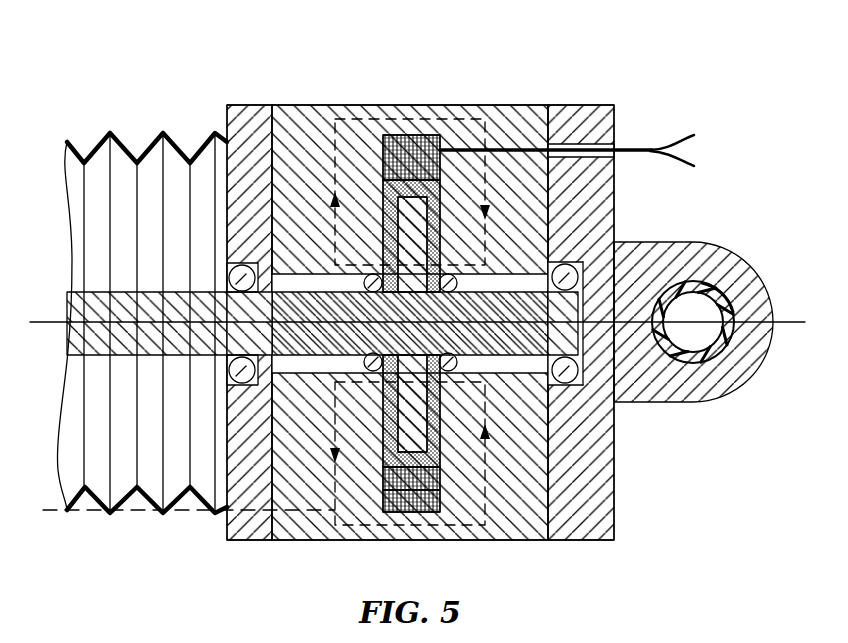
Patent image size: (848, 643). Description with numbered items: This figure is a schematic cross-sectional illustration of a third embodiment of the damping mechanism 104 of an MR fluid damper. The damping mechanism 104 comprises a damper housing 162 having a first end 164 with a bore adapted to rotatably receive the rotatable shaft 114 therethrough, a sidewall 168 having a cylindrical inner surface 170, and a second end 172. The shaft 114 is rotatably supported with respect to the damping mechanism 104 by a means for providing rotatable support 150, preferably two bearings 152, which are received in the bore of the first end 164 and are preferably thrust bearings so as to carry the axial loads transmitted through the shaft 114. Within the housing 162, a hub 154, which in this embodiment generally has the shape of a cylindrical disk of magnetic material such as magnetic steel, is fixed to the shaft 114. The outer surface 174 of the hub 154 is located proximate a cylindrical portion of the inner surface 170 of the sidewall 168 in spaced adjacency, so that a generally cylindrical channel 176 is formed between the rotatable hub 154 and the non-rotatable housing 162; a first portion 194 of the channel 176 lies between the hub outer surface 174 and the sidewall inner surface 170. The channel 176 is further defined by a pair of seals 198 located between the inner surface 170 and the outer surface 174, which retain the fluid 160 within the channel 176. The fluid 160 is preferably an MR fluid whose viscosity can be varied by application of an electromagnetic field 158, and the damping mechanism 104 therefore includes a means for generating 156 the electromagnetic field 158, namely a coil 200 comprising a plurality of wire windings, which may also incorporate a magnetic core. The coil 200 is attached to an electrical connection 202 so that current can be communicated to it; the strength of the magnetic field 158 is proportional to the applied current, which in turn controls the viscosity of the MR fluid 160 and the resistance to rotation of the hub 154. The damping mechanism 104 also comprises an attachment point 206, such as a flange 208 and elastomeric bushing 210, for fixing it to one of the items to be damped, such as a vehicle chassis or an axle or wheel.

The damping mechanism 104 is at (630, 63).
The rotatable shaft 114 is at (709, 292).
The means for providing rotatable support 150 is at (228, 388).
The bearing 152 is at (240, 371).
The hub 154 is at (412, 238).
The means for generating electromagnetic field 156 is at (440, 487).
The electromagnetic field 158 is at (483, 500).
The fluid 160 is at (412, 463).
The damper housing 162 is at (423, 167).
The first end 164 is at (223, 118).
The sidewall 168 is at (295, 155).
The cylindrical inner surface 170 is at (445, 235).
The second end 172 is at (614, 123).
The outer surface 174 is at (400, 437).
The channel 176 is at (360, 168).
The first portion of channel 194 is at (392, 410).
The seals 198 is at (450, 358).
The coil 200 is at (412, 507).
The electrical connection 202 is at (688, 147).
The attachment point 206 is at (738, 261).
The flange 208 is at (736, 285).
The elastomeric bushing 210 is at (723, 353).